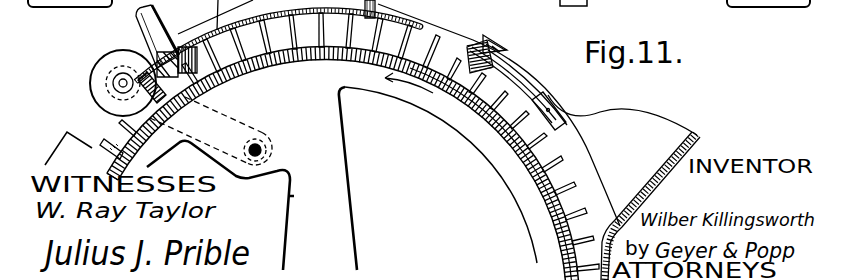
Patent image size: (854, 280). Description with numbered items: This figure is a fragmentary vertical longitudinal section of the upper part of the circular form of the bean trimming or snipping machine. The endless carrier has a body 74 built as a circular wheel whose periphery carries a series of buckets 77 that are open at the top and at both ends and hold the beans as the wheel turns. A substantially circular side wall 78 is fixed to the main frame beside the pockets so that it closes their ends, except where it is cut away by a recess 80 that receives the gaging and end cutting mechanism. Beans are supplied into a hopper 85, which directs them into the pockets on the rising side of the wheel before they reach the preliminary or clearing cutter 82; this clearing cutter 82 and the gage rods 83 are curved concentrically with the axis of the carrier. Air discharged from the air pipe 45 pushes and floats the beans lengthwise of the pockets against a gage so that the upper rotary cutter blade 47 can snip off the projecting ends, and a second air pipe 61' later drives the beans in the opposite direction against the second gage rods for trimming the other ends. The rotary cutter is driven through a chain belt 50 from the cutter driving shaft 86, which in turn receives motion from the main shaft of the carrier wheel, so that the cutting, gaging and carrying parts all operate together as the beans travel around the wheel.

The air pipe 45 is at (422, 6).
The upper rotary cutter blade 47 is at (92, 74).
The chain belt 50 is at (242, 125).
The air pipe 61' is at (145, 54).
The carrier body 74 is at (510, 138).
The buckets 77 is at (563, 173).
The side wall 78 is at (682, 6).
The recess 80 is at (84, 133).
The preliminary or clearing cutter 82 is at (517, 97).
The gage rods 83 is at (469, 9).
The hopper 85 is at (653, 117).
The cutter driving shaft 86 is at (268, 150).